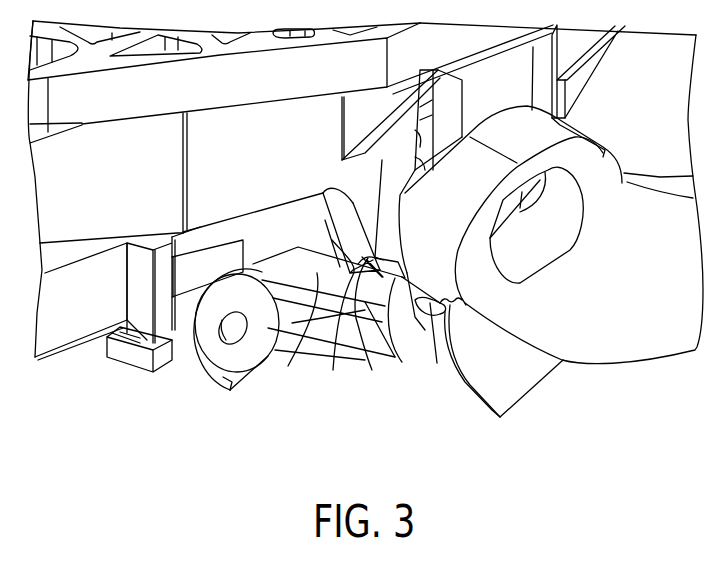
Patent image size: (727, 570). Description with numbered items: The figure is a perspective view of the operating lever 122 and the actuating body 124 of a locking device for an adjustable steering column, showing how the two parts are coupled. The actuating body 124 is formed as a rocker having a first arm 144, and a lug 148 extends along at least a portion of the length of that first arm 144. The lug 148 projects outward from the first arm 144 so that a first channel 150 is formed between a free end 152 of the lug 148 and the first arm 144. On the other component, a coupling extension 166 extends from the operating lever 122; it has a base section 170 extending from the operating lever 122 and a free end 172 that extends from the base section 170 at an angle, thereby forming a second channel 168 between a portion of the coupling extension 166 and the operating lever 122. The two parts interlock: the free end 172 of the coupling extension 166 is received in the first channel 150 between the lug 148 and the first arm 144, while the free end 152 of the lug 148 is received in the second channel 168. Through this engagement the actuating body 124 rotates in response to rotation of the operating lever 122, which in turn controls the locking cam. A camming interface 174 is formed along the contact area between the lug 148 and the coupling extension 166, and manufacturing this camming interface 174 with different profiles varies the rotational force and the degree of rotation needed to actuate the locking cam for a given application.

The operating lever 122 is at (652, 352).
The actuating body 124 is at (247, 370).
The first arm 144 is at (298, 330).
The lug 148 is at (340, 330).
The first channel 150 is at (363, 330).
The free end 152 is at (413, 327).
The coupling extension 166 is at (503, 420).
The second channel 168 is at (440, 367).
The base section 170 is at (532, 380).
The free end 172 is at (390, 322).
The camming interface 174 is at (427, 292).